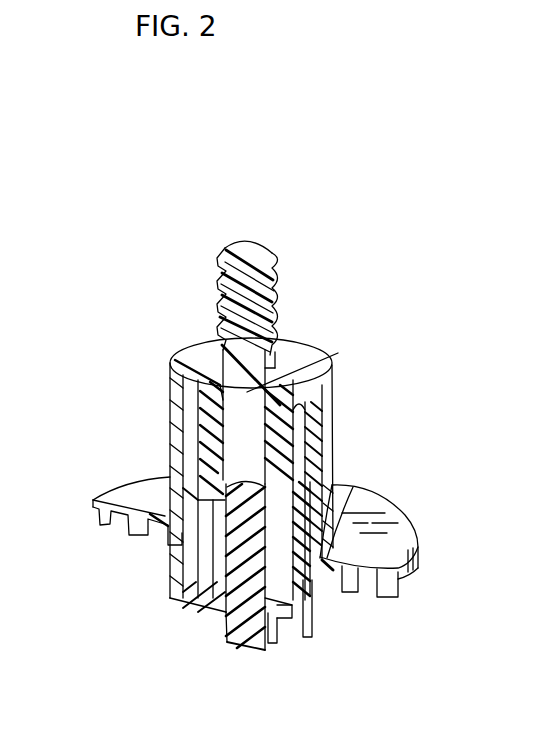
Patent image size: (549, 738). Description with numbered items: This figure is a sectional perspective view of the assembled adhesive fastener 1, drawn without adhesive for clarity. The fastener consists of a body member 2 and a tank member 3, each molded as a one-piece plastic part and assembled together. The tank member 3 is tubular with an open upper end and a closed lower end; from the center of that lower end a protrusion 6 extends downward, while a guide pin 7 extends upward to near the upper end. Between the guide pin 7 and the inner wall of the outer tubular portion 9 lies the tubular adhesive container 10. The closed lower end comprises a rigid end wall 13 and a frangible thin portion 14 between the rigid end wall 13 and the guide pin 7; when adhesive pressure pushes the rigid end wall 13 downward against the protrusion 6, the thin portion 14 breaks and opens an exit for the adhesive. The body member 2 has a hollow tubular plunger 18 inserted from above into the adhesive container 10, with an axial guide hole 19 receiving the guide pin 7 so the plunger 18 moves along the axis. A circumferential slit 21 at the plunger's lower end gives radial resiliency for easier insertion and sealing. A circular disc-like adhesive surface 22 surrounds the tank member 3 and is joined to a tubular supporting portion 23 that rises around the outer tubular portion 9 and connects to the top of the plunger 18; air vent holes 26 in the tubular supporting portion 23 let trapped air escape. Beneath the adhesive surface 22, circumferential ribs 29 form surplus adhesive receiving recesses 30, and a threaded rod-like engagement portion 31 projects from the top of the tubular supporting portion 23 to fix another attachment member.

The adhesive fastener 1 is at (431, 332).
The body member 2 is at (136, 547).
The tank member 3 is at (179, 601).
The protrusion 6 is at (237, 645).
The guide pin 7 is at (237, 540).
The outer tubular portion 9 is at (317, 583).
The adhesive container 10 is at (345, 495).
The rigid end wall 13 is at (277, 618).
The frangible thin portion 14 is at (270, 613).
The plunger 18 is at (280, 437).
The guide hole 19 is at (280, 383).
The circumferential slit 21 is at (202, 472).
The adhesive surface 22 is at (402, 538).
The tubular supporting portion 23 is at (180, 418).
The air vent hole 26 is at (172, 392).
The circumferential ribs 29 is at (352, 592).
The surplus adhesive receiving recesses 30 is at (385, 595).
The engagement portion 31 is at (258, 287).